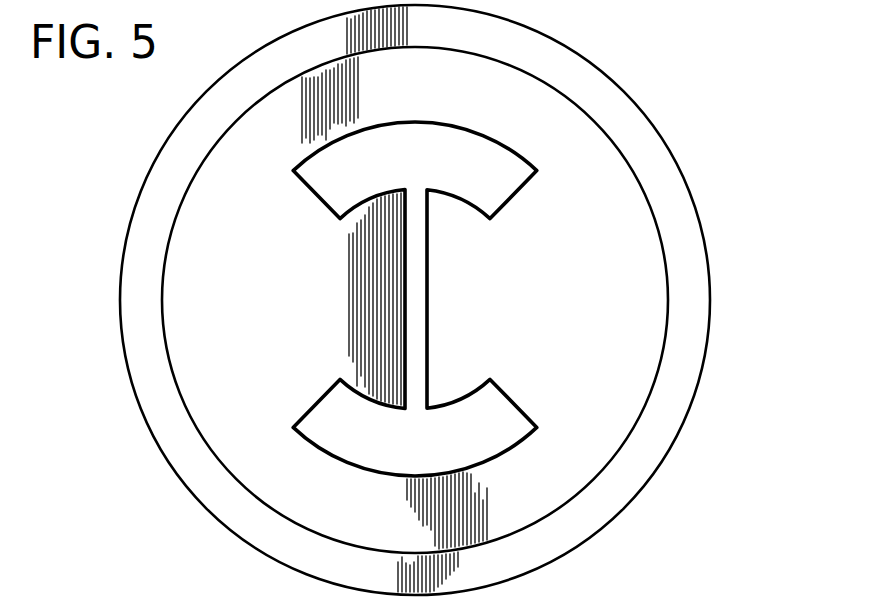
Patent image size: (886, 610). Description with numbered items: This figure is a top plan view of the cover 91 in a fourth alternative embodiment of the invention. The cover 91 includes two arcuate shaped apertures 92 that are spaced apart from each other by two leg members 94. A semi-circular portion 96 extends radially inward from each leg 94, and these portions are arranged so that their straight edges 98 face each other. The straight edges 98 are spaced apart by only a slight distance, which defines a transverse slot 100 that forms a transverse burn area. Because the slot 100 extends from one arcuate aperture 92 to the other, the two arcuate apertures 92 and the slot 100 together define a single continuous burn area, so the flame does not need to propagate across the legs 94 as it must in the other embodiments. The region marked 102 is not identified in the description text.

The cover 91 is at (671, 106).
The arcuate shaped apertures 92 is at (525, 152).
The leg members 94 is at (183, 270).
The semi-circular portion 96 is at (362, 378).
The straight edges 98 is at (404, 291).
The transverse slot 100 is at (414, 202).
The flux path region 102 is at (347, 203).